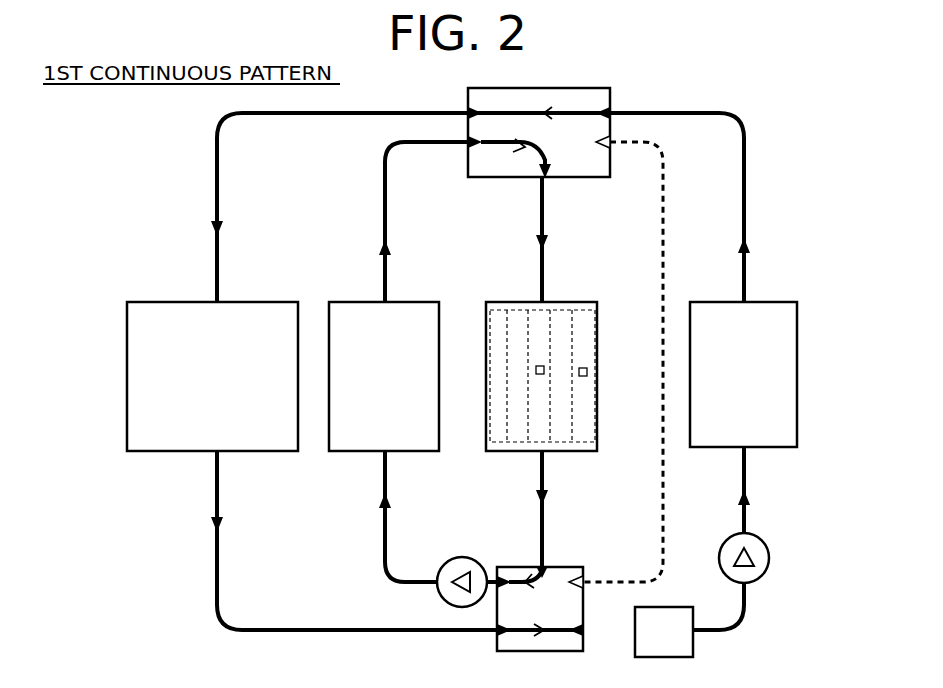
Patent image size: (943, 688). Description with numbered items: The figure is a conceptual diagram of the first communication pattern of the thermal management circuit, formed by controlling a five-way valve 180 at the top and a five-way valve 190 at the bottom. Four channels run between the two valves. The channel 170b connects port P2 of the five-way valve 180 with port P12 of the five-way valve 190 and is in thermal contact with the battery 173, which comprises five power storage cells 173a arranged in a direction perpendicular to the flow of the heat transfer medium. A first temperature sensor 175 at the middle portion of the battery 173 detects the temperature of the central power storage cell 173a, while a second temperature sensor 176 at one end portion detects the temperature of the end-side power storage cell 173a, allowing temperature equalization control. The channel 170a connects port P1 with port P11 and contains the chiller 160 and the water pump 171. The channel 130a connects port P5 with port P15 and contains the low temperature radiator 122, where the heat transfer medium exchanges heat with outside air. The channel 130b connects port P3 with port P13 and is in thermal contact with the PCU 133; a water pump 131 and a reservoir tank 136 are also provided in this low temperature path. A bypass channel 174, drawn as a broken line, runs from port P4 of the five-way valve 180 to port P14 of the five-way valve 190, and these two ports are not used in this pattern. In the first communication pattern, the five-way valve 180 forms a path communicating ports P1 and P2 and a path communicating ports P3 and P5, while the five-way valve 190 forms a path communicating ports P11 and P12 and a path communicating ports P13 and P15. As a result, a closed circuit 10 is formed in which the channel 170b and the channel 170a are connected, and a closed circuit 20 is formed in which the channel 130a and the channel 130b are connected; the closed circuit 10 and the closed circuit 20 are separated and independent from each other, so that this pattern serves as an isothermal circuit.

The closed circuit 10 is at (481, 352).
The closed circuit 20 is at (520, 360).
The low temperature radiator 122 is at (245, 301).
The channel 130a is at (219, 198).
The channel 130b is at (746, 208).
The water pump 131 is at (760, 540).
The Power Control Unit (PCU) 133 is at (773, 301).
The reservoir tank 136 is at (657, 607).
The chiller 160 is at (410, 301).
The channel 170a is at (387, 218).
The channel 170b is at (544, 228).
The water pump 171 is at (455, 559).
The battery 173 is at (554, 372).
The power storage cells 173a is at (597, 312).
The bypass channel 174 is at (665, 223).
The first temperature sensor 175 is at (540, 374).
The second temperature sensor 176 is at (588, 372).
The five-way valve 180 is at (539, 132).
The five-way valve 190 is at (556, 596).
The port P1 is at (475, 145).
The port P2 is at (546, 179).
The port P3 is at (608, 111).
The port P4 is at (600, 148).
The port P5 is at (470, 111).
The port P11 is at (502, 577).
The port P12 is at (538, 568).
The port P13 is at (575, 648).
The port P14 is at (585, 580).
The port P15 is at (507, 648).